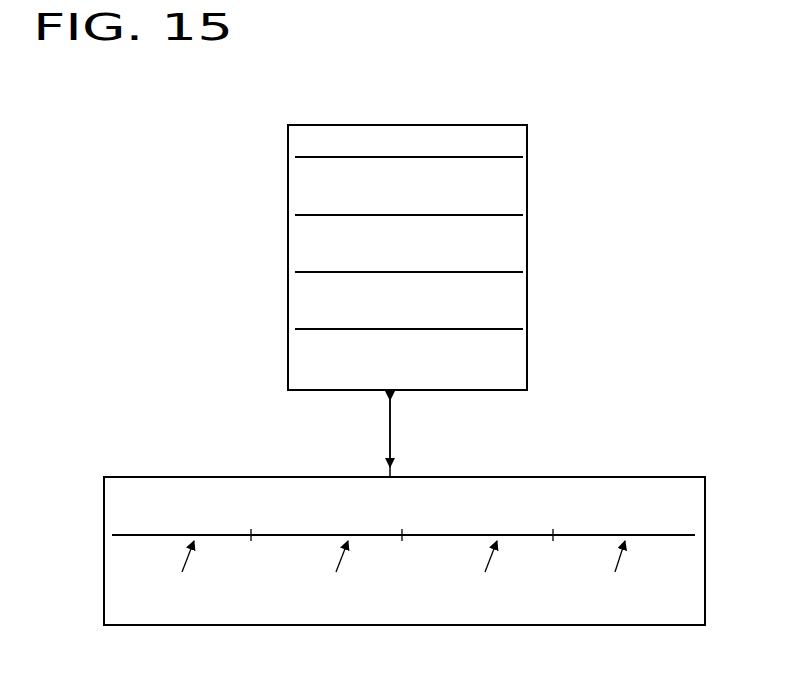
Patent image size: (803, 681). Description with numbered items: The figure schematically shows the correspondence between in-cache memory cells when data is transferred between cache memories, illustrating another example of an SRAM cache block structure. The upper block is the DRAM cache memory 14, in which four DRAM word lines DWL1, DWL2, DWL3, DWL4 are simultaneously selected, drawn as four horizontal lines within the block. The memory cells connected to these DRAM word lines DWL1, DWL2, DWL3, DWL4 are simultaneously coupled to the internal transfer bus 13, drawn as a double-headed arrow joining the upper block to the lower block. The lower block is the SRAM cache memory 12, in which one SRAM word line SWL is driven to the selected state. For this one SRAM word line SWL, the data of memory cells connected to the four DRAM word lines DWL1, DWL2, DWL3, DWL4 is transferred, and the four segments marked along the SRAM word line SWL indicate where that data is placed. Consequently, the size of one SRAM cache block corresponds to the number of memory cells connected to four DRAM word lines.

The SRAM cache memory 12 is at (651, 476).
The internal transfer bus 13 is at (391, 437).
The DRAM cache memory 14 is at (461, 125).
The SRAM word line SWL is at (459, 534).
The DRAM word line DWL1 is at (385, 158).
The DRAM word line DWL2 is at (385, 216).
The DRAM word line DWL3 is at (385, 273).
The DRAM word line DWL4 is at (385, 330).